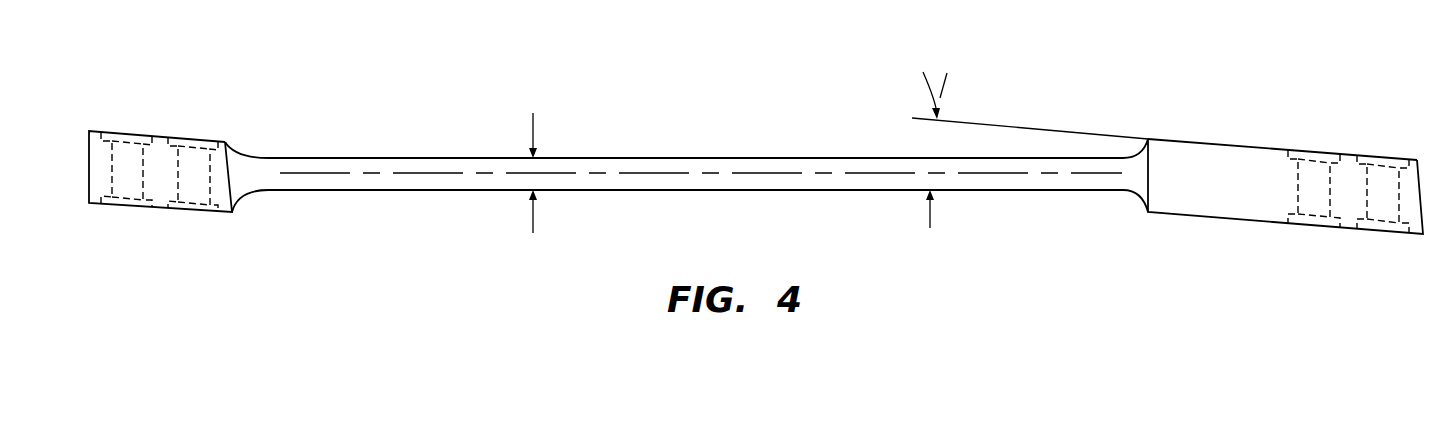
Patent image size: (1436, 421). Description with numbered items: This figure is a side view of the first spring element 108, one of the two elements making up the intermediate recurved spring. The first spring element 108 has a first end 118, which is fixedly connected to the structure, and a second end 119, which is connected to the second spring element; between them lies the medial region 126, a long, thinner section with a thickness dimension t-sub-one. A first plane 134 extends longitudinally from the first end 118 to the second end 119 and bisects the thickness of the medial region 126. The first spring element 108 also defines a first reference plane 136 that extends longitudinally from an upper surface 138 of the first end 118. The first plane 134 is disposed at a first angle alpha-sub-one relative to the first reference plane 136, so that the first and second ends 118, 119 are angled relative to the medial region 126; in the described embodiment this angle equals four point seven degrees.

The first spring element 108 is at (362, 104).
The first end 118 is at (1210, 218).
The second end 119 is at (125, 208).
The medial region 126 is at (688, 158).
The first plane 134 is at (318, 172).
The first reference plane 136 is at (1046, 128).
The upper surface 138 is at (1228, 142).